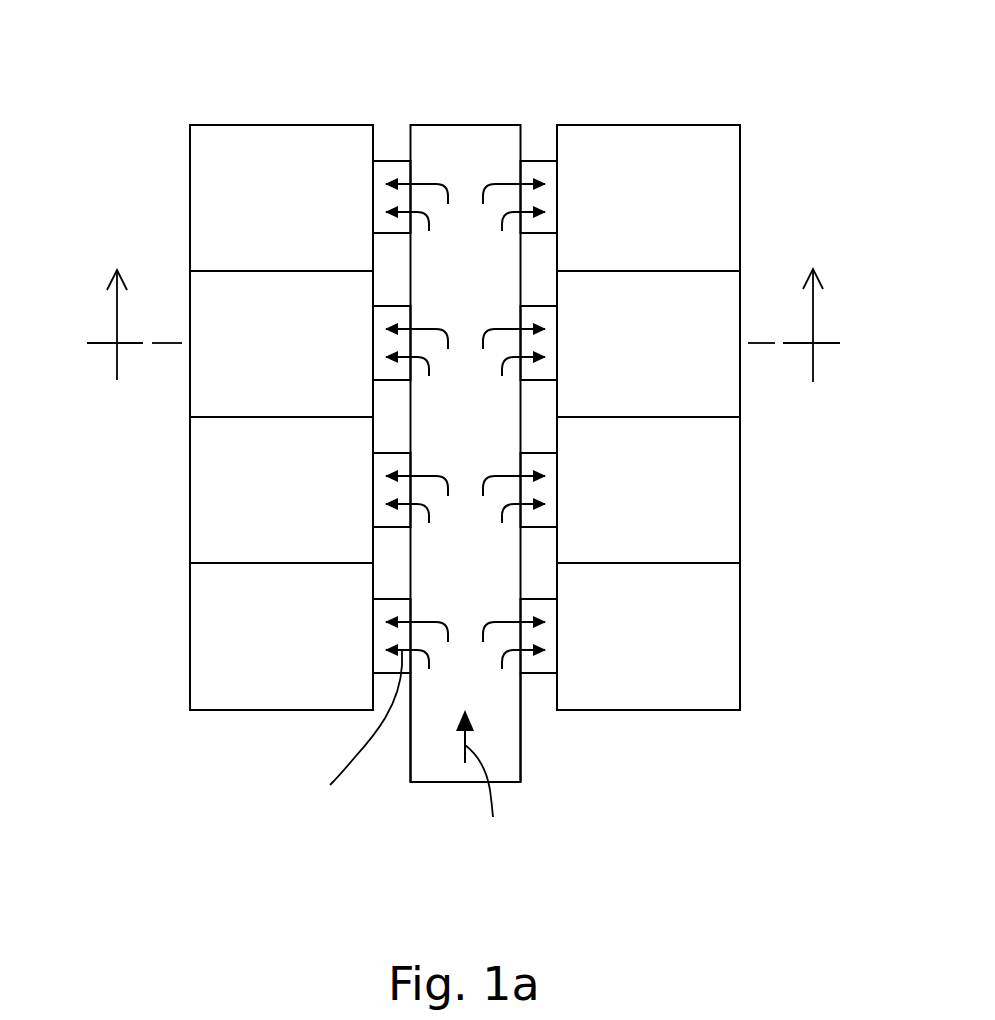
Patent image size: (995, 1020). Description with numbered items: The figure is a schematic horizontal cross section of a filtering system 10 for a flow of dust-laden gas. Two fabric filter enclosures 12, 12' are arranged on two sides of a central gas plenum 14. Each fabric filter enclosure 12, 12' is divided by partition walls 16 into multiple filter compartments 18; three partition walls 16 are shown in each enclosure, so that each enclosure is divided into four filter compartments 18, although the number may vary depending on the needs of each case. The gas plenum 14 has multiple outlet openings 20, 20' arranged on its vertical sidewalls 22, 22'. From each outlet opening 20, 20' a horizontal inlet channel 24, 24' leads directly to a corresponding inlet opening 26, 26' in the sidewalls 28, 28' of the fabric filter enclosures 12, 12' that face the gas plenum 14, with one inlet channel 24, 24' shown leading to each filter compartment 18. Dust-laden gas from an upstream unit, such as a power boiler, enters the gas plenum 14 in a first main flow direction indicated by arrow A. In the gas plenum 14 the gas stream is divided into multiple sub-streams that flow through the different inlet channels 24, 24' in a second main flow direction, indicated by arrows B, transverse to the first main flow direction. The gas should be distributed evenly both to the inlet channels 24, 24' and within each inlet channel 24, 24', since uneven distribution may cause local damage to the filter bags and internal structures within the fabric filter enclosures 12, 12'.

The filtering system 10 is at (205, 88).
The fabric filter enclosure 12 is at (234, 408).
The fabric filter enclosure 12' is at (648, 400).
The gas plenum 14 is at (457, 125).
The partition wall 16 is at (287, 271).
The filter compartment 18 is at (252, 302).
The outlet opening 20 is at (252, 417).
The outlet opening 20' is at (686, 417).
The vertical sidewall 22 is at (383, 758).
The vertical sidewall 22' is at (565, 739).
The horizontal inlet channel 24 is at (264, 476).
The horizontal inlet channel 24' is at (675, 478).
The inlet opening 26 is at (224, 412).
The inlet opening 26' is at (709, 416).
The sidewall 28 is at (318, 724).
The sidewall 28' is at (644, 719).